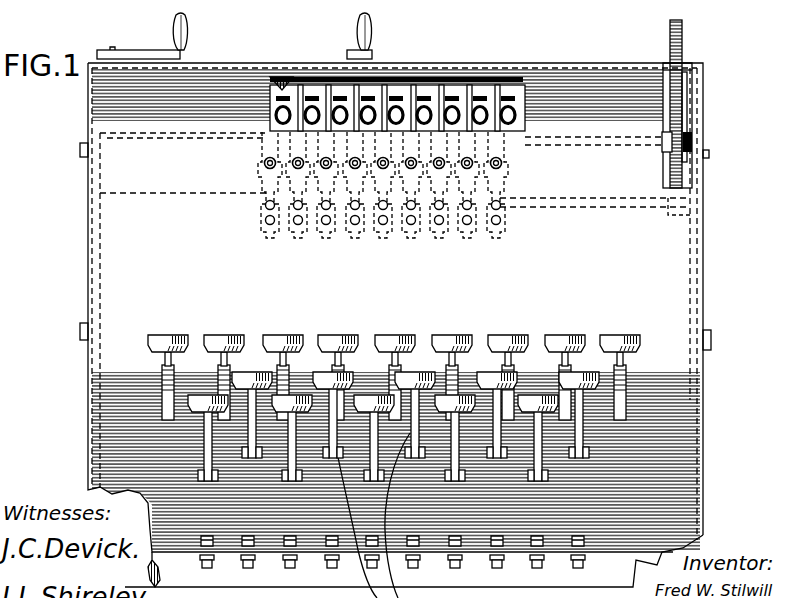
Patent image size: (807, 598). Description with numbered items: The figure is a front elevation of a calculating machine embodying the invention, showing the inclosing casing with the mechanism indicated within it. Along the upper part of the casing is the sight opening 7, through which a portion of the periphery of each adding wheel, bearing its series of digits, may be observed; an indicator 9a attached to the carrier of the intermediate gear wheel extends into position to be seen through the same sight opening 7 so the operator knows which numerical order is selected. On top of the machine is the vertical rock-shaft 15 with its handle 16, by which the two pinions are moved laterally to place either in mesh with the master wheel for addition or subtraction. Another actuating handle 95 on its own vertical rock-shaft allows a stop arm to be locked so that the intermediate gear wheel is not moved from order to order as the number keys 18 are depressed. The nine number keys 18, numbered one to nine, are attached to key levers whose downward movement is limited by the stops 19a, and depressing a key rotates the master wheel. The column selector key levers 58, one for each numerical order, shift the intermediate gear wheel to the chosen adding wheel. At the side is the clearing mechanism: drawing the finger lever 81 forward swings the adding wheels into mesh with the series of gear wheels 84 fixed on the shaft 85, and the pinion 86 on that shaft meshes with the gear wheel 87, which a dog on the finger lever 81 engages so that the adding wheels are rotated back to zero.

The sight opening 7 is at (270, 110).
The indicator 9a is at (288, 72).
The vertical rock-shaft 15 is at (110, 47).
The handle 16 is at (186, 26).
The number keys 18 is at (290, 405).
The stops 19a is at (535, 540).
The column selector key levers 58 is at (224, 362).
The finger lever 81 is at (683, 32).
The gear wheels 84 is at (298, 235).
The shaft 85 is at (596, 210).
The pinion 86 is at (676, 214).
The gear wheel 87 is at (672, 170).
The actuating handle 95 is at (370, 31).